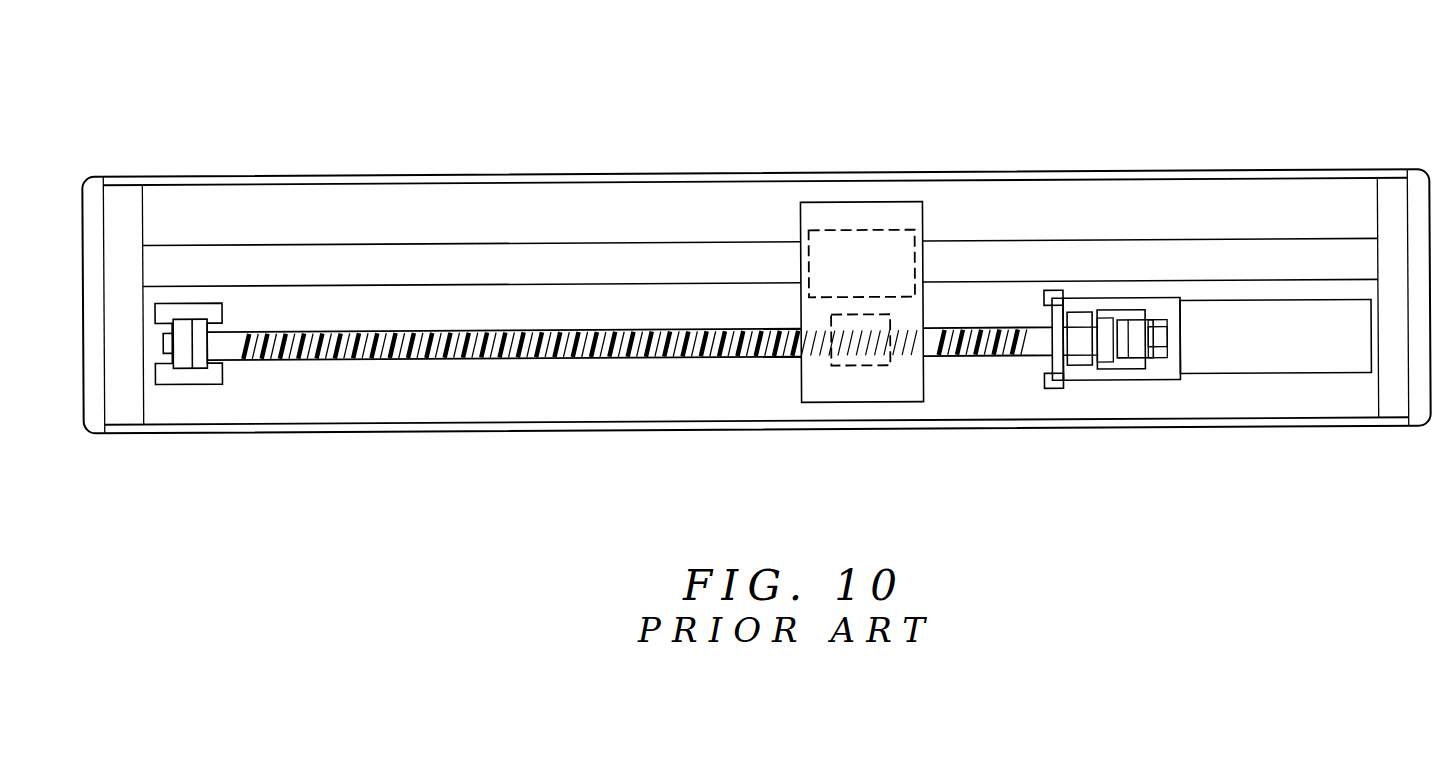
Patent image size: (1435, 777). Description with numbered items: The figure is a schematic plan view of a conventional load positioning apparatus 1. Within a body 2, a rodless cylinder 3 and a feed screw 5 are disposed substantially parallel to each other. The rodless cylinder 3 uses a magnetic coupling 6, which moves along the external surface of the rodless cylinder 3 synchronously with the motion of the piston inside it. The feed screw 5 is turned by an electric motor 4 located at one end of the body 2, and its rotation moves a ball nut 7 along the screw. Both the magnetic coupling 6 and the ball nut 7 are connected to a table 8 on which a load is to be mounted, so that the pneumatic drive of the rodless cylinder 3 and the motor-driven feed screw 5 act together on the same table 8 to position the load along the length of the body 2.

The load positioning apparatus 1 is at (1067, 107).
The body 2 is at (243, 176).
The rodless cylinder 3 is at (512, 213).
The electric motor 4 is at (1270, 374).
The feed screw 5 is at (632, 360).
The magnetic coupling 6 is at (877, 228).
The ball nut 7 is at (852, 367).
The table 8 is at (816, 200).